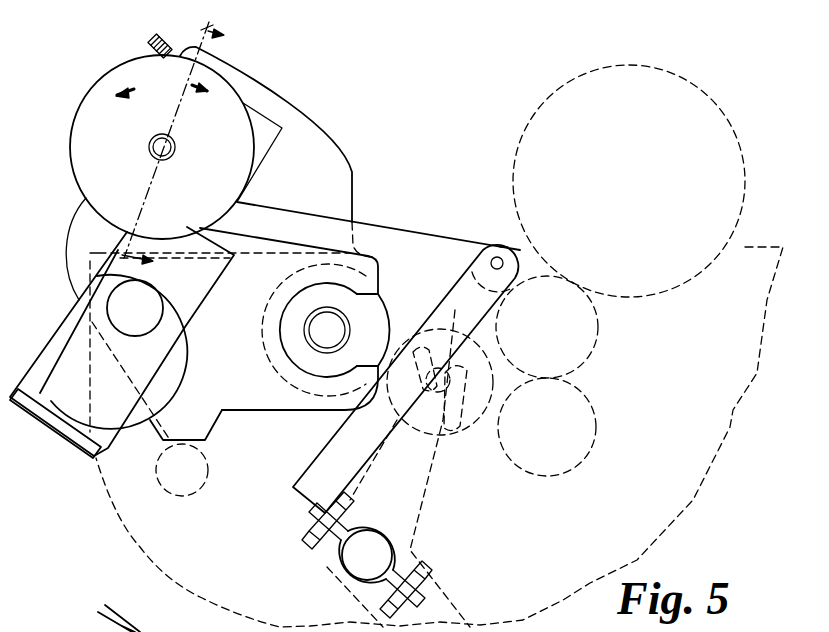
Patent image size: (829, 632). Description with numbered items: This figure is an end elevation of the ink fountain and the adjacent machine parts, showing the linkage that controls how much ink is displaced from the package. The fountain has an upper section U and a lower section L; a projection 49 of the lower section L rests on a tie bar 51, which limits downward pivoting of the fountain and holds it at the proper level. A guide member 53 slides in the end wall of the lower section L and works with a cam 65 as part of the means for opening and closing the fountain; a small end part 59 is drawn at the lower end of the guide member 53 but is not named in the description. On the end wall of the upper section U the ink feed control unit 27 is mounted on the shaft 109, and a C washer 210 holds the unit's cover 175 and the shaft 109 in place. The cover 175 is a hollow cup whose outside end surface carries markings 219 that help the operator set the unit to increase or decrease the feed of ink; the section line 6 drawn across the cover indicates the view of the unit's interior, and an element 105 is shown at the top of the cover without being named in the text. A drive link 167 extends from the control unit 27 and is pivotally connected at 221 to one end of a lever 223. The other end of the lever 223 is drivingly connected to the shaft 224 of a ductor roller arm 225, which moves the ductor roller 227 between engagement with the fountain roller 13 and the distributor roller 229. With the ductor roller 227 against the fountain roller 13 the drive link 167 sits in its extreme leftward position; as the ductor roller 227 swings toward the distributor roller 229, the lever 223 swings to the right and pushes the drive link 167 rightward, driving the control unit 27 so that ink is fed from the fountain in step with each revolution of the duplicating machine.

The ink feed control unit 27 is at (80, 85).
The shaft 109 is at (175, 145).
The C washer 210 is at (172, 152).
The markings 219 is at (137, 72).
The set screw 105 is at (167, 38).
The section line 6- 6 is at (181, 150).
The cover 175 is at (240, 90).
The upper section U is at (353, 165).
The drive link 167 is at (383, 230).
The fountain roller 13 is at (383, 296).
The lower section L is at (268, 412).
The projection 49 is at (210, 432).
The tie bar 51 is at (208, 474).
The guide member 53 is at (66, 328).
The end plate 59 is at (56, 428).
The cam 65 is at (188, 365).
The lever 223 is at (447, 308).
The pivotal connection 221 is at (500, 252).
The ductor roller 227 is at (448, 440).
The ductor roller arm 225 is at (420, 500).
The distributor roller 229 is at (566, 472).
The shaft 224 is at (346, 560).